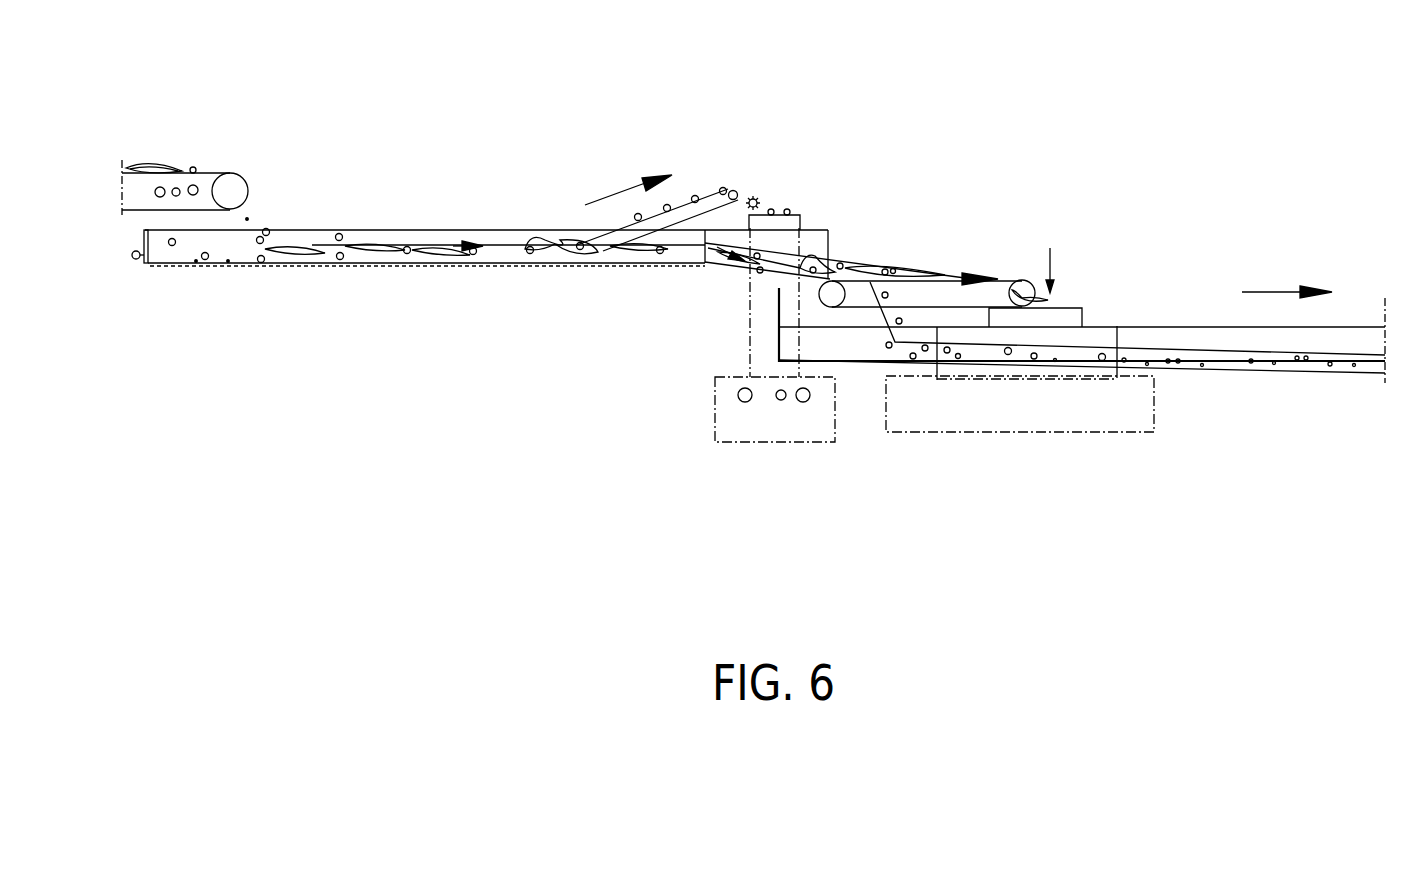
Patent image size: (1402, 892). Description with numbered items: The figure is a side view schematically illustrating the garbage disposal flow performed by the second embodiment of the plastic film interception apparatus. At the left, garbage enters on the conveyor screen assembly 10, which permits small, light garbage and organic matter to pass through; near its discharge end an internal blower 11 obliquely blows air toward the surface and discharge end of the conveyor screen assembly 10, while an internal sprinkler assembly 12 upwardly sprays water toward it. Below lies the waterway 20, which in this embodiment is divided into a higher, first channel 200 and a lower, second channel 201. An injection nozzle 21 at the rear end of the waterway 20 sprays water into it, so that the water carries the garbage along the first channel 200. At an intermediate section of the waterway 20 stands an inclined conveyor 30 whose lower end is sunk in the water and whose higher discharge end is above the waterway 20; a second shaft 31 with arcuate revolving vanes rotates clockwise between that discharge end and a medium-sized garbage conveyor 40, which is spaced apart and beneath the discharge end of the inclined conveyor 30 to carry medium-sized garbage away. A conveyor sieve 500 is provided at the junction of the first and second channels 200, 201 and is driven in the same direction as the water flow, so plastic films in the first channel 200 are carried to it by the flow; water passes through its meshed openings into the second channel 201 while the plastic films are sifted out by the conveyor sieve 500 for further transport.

The conveyor screen assembly 10 is at (221, 145).
The internal blower 11 is at (191, 185).
The internal sprinkler assembly 12 is at (158, 187).
The waterway 20 is at (711, 298).
The injection nozzle 21 is at (135, 260).
The inclined conveyor 30 is at (704, 175).
The second shaft 31 is at (757, 200).
The medium-sized garbage conveyor 40 is at (803, 198).
The first channel 200 is at (439, 265).
The second channel 201 is at (863, 364).
The conveyor sieve 500 is at (960, 267).